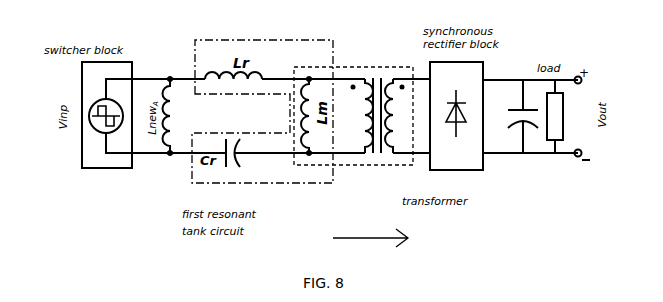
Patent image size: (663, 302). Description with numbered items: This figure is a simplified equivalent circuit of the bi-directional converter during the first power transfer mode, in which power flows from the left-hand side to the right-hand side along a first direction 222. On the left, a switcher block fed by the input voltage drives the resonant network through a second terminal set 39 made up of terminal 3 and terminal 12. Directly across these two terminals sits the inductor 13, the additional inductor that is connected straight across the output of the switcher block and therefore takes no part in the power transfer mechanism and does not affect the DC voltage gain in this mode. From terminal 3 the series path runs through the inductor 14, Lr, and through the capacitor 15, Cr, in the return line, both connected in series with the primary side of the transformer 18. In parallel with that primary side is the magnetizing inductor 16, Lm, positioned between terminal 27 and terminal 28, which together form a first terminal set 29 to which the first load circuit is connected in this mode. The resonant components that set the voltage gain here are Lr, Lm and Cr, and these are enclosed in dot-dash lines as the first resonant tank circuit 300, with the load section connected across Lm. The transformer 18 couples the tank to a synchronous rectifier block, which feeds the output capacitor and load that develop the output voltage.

The terminal 3 is at (170, 77).
The second terminal set 39 is at (166, 112).
The terminal 12 is at (170, 155).
The inductor 13 is at (174, 102).
The inductor 14 is at (222, 77).
The capacitor 15 is at (240, 156).
The magnetizing inductor 16 is at (301, 111).
The terminal 27 is at (308, 77).
The terminal 28 is at (310, 156).
The first terminal set 29 is at (318, 122).
The transformer 18 is at (396, 168).
The first resonant tank circuit 300 is at (239, 185).
The first direction 222 is at (386, 233).